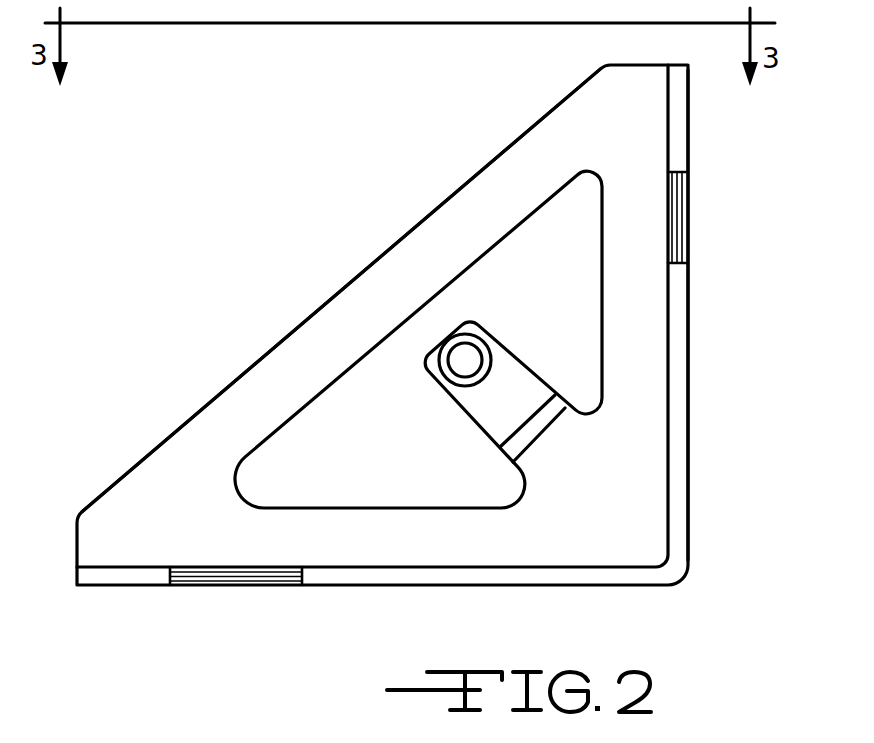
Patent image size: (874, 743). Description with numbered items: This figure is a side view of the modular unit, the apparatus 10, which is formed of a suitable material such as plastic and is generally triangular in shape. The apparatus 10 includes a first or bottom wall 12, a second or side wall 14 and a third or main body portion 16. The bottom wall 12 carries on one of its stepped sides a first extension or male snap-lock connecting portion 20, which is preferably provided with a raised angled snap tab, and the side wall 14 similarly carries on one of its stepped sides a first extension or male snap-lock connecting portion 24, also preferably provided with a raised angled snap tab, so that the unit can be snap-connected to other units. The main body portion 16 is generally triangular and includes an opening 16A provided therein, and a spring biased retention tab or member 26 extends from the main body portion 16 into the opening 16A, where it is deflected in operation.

The apparatus 10 is at (364, 208).
The first or bottom wall 12 is at (390, 572).
The second or side wall 14 is at (682, 408).
The third or main body portion 16 is at (343, 323).
The opening 16A is at (267, 466).
The first extension or first male snap-lock connecting portion 20 is at (220, 587).
The first extension or first male snap-lock connecting portion 24 is at (677, 225).
The spring biased retention tab or member 26 is at (473, 405).